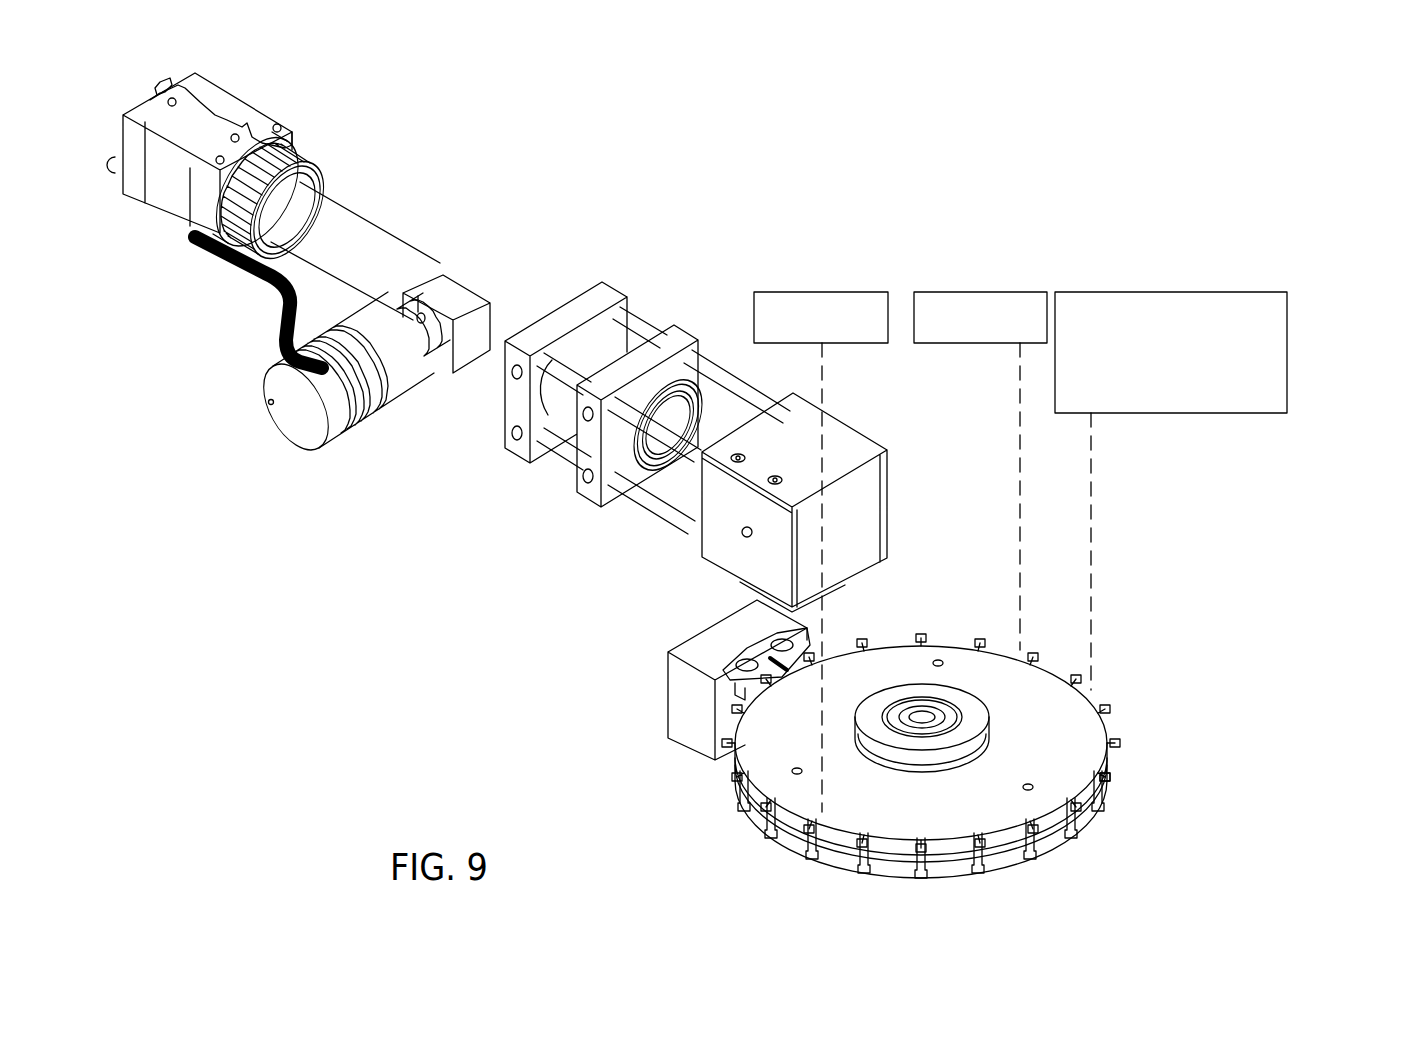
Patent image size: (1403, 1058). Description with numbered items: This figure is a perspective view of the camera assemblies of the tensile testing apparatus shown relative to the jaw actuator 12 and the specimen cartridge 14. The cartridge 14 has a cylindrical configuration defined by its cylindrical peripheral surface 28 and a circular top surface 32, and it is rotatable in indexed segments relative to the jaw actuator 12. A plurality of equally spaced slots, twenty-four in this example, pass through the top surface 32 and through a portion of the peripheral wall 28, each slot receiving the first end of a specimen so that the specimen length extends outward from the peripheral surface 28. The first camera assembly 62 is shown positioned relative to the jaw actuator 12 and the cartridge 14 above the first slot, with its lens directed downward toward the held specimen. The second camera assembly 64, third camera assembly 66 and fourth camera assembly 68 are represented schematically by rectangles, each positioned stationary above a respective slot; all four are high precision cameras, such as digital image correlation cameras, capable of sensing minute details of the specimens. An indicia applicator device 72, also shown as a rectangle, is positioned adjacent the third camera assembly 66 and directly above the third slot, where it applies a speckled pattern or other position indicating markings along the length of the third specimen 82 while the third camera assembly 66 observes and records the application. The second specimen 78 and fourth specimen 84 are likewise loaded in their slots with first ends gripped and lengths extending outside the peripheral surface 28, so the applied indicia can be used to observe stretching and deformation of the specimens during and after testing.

The jaw actuator 12 is at (678, 742).
The specimen cartridge 14 is at (1020, 802).
The cylindrical peripheral surface 28 is at (940, 862).
The circular top surface 32 is at (948, 822).
The first camera assembly 62 is at (657, 303).
The second camera assembly 64 is at (1023, 292).
The third camera assembly 66 is at (1078, 292).
The fourth camera assembly 68 is at (826, 292).
The indicia applicator device 72 is at (1287, 353).
The second specimen 78 is at (1018, 652).
The third specimen 82 is at (1093, 807).
The fourth specimen 84 is at (818, 857).